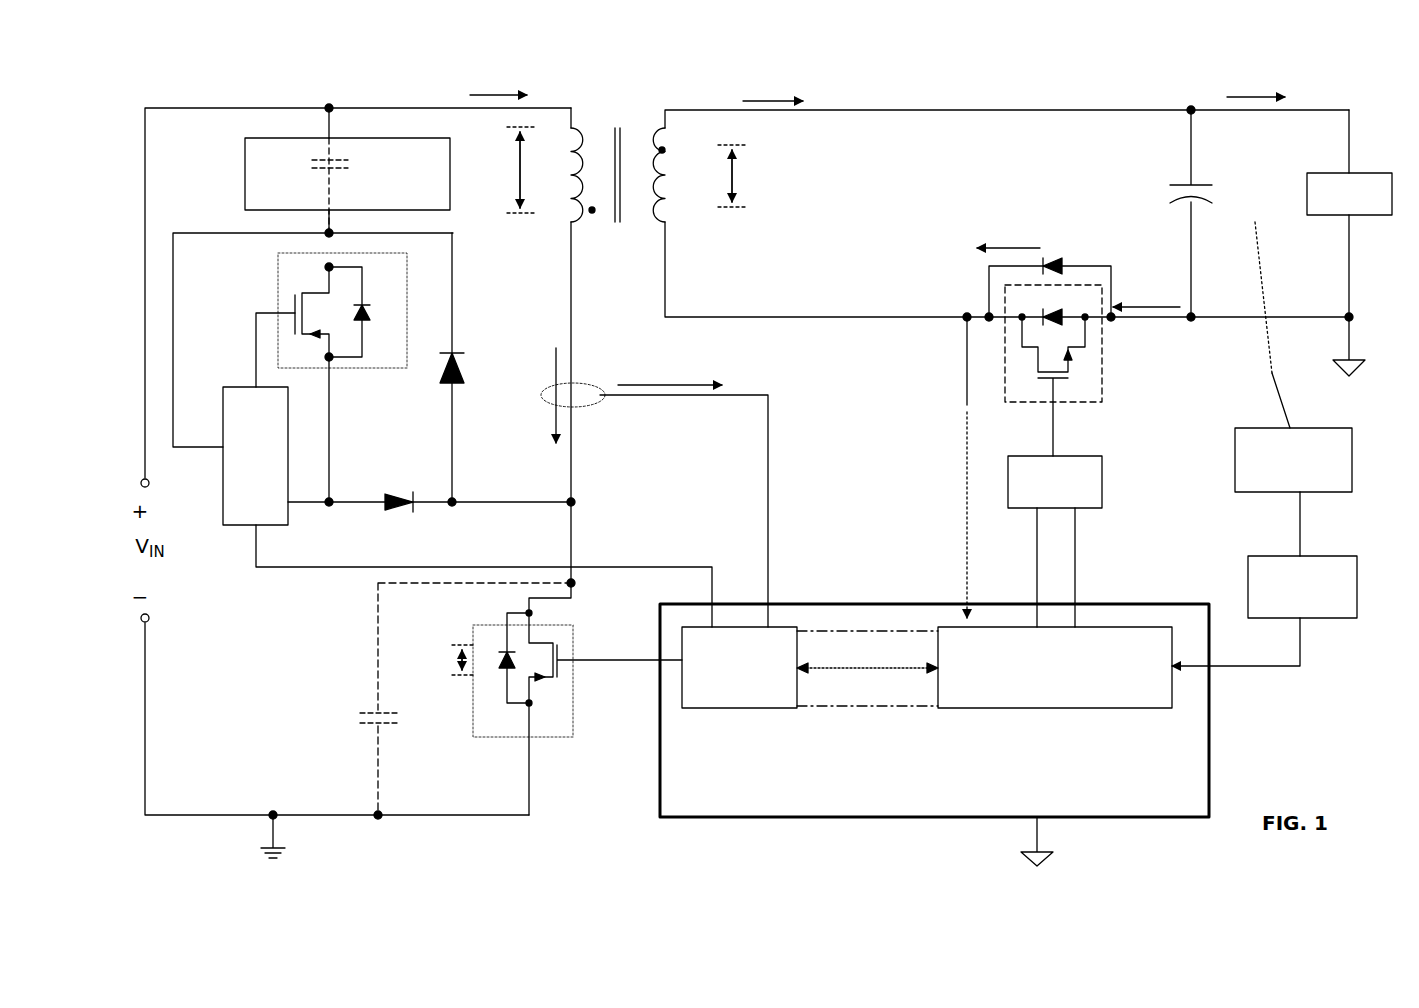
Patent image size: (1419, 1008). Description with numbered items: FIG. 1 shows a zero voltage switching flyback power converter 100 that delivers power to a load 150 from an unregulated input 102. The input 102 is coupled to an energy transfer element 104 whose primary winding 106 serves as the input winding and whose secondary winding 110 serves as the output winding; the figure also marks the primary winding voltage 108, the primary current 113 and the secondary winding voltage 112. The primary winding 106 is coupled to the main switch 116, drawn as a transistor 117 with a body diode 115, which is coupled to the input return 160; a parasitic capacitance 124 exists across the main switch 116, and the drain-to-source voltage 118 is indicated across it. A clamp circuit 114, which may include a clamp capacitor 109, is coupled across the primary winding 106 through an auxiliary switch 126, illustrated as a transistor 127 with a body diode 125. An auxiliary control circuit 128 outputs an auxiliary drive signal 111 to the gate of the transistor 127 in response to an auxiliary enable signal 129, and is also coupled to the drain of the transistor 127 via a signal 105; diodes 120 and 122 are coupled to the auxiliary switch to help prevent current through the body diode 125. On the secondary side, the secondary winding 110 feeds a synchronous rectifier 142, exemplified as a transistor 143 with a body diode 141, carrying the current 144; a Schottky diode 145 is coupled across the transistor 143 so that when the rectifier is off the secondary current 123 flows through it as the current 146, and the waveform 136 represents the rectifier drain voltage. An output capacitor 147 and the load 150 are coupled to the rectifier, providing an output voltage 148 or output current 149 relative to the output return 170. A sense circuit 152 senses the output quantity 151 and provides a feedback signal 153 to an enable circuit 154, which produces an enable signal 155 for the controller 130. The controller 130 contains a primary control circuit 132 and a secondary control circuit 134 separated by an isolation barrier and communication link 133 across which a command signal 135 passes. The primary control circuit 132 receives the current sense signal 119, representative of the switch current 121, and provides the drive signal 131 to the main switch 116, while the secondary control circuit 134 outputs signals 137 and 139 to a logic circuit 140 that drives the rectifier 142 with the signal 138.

The power converter 100 is at (1337, 59).
The input VIN 102 is at (146, 523).
The energy transfer element T1 104 is at (614, 118).
The signal 105 is at (190, 446).
The primary winding 106 is at (552, 166).
The primary winding voltage VP 108 is at (498, 176).
The clamp capacitor CCL 109 is at (362, 174).
The secondary winding 110 is at (682, 162).
The auxiliary drive signal UAUX 111 is at (230, 332).
The secondary winding voltage VS 112 is at (762, 180).
The primary current IP 113 is at (471, 85).
The clamp circuit 114 is at (240, 187).
The body diode D1 115 is at (493, 710).
The main switch S1 116 is at (548, 762).
The transistor Q1 117 is at (550, 709).
The drain-source voltage VDS 118 is at (433, 685).
The current sense signal 119 is at (646, 358).
The diode D4 120 is at (490, 384).
The main switch current ID 121 is at (544, 363).
The diode D5 122 is at (372, 528).
The secondary current IS 123 is at (750, 88).
The parasitic capacitance CP 124 is at (341, 712).
The body diode D2 125 is at (390, 296).
The auxiliary switch S2 126 is at (420, 276).
The transistor Q2 127 is at (316, 288).
The auxiliary control circuit 128 is at (240, 537).
The auxiliary enable signal AUX_EN 129 is at (632, 536).
The controller 130 is at (826, 828).
The primary drive signal UDR 131 is at (612, 670).
The primary control circuit 132 is at (749, 710).
The isolation barrier and communication link 133 is at (912, 768).
The secondary control circuit 134 is at (1070, 712).
The command signal UCOMM 135 is at (868, 674).
The waveform FWD 136 is at (942, 384).
The signal UON 137 is at (1014, 563).
The signal USR 138 is at (1106, 432).
The signal UOFF 139 is at (1105, 565).
The logic circuit 140 is at (1109, 484).
The body diode D3 141 is at (1050, 300).
The synchronous rectifier SR 142 is at (1122, 360).
The transistor Q3 143 is at (1022, 372).
The current ISR 144 is at (1162, 278).
The Schottky diode DSC 145 is at (1086, 244).
The current IDSC 146 is at (1013, 228).
The output capacitor CO 147 is at (1128, 162).
The output voltage VO 148 is at (1252, 174).
The output current IO 149 is at (1219, 84).
The load 150 is at (1378, 161).
The output quantity UO 151 is at (1293, 270).
The sense circuit 152 is at (1346, 416).
The feedback signal UFB 153 is at (1252, 524).
The enable circuit 154 is at (1360, 543).
The enable signal UEN 155 is at (1250, 674).
The input return 160 is at (263, 851).
The output return 170 is at (1320, 372).